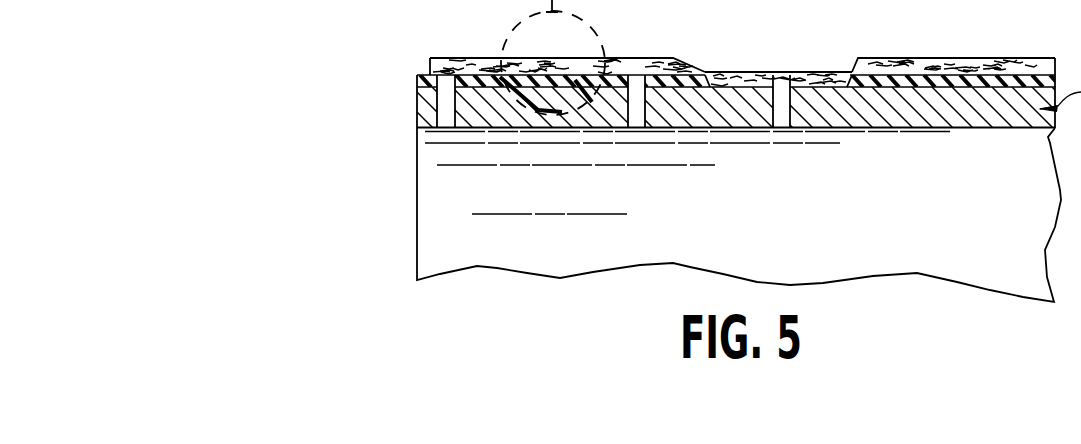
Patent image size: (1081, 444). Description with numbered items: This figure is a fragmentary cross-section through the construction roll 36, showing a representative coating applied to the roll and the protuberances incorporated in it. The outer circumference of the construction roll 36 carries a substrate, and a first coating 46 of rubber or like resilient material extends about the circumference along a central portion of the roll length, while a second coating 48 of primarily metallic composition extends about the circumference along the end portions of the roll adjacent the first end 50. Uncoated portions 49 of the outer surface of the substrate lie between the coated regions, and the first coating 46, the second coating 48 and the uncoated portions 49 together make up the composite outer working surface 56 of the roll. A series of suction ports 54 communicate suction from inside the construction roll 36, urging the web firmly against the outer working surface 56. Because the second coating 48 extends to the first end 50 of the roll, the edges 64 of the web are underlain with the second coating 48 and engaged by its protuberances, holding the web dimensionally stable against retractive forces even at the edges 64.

The construction roll 36 is at (404, 220).
The first coating 46 is at (985, 79).
The second coating 48 is at (469, 78).
The uncoated portions 49 is at (730, 88).
The first end 50 is at (417, 153).
The suction ports 54 is at (637, 84).
The outer working surface 56 is at (486, 50).
The edges 64 is at (430, 65).